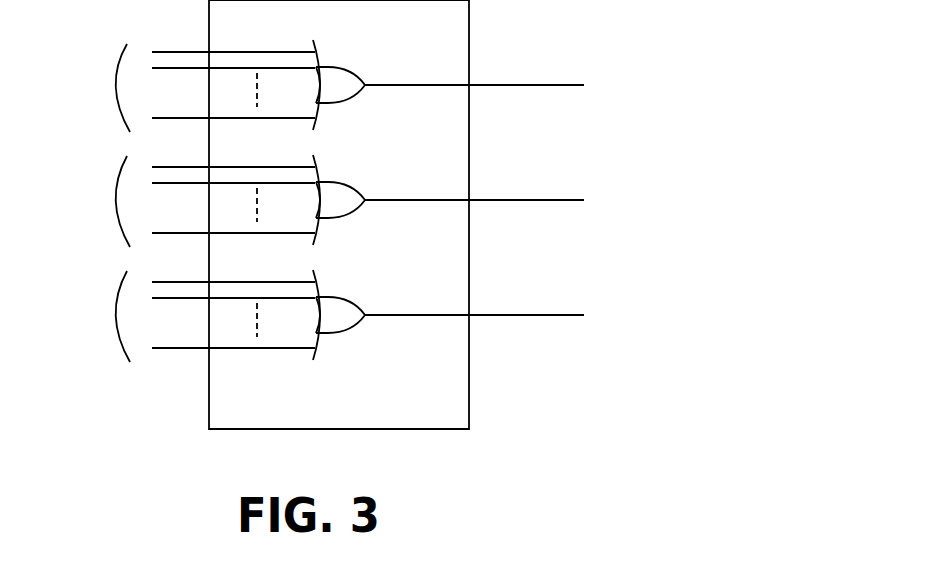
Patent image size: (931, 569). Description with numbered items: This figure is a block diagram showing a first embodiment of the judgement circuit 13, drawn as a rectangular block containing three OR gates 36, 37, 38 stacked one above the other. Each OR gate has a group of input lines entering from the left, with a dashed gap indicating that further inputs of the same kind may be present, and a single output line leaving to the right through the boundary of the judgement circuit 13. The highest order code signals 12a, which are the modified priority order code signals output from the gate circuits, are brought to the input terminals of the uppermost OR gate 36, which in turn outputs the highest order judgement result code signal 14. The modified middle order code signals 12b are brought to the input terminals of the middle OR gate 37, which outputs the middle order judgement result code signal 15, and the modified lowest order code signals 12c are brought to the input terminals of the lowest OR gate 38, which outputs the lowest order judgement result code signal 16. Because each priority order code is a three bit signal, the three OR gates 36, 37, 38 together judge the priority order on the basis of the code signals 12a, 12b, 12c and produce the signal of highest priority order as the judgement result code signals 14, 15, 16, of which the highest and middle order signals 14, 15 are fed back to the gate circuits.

The highest order code signal 12a is at (115, 90).
The middle order code signal 12b is at (115, 205).
The lowest order code signal 12c is at (115, 320).
The judgement circuit 13 is at (469, 392).
The highest order judgement result code signal 14 is at (540, 85).
The middle order judgement result code signal 15 is at (540, 200).
The lowest order judgement result code signal 16 is at (540, 315).
The OR gate 36 is at (355, 71).
The OR gate 37 is at (355, 186).
The OR gate 38 is at (355, 301).